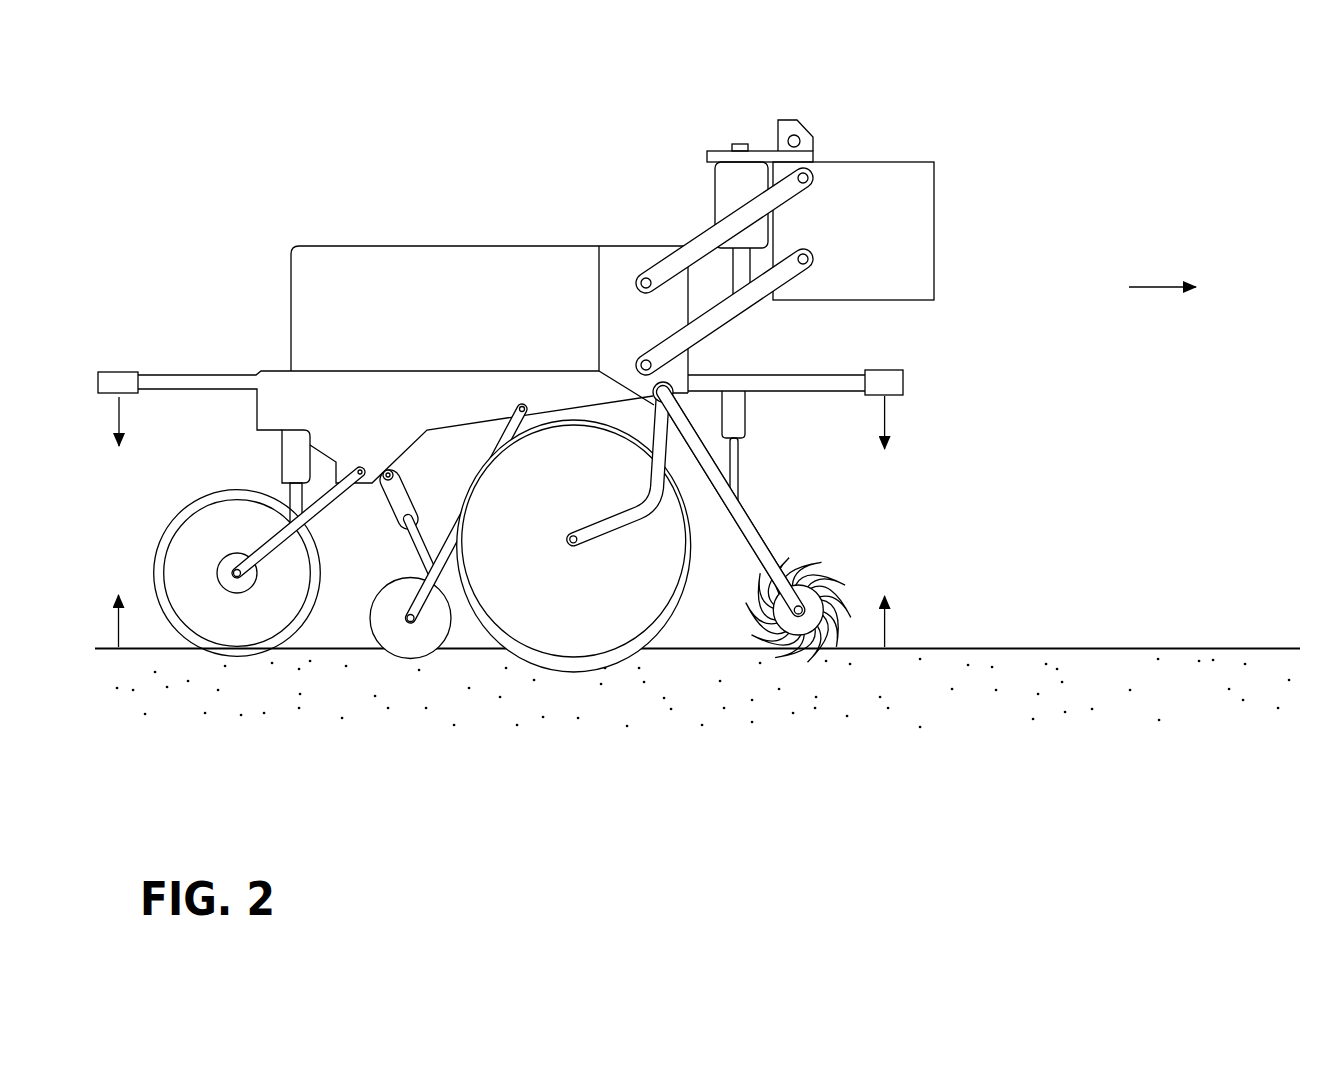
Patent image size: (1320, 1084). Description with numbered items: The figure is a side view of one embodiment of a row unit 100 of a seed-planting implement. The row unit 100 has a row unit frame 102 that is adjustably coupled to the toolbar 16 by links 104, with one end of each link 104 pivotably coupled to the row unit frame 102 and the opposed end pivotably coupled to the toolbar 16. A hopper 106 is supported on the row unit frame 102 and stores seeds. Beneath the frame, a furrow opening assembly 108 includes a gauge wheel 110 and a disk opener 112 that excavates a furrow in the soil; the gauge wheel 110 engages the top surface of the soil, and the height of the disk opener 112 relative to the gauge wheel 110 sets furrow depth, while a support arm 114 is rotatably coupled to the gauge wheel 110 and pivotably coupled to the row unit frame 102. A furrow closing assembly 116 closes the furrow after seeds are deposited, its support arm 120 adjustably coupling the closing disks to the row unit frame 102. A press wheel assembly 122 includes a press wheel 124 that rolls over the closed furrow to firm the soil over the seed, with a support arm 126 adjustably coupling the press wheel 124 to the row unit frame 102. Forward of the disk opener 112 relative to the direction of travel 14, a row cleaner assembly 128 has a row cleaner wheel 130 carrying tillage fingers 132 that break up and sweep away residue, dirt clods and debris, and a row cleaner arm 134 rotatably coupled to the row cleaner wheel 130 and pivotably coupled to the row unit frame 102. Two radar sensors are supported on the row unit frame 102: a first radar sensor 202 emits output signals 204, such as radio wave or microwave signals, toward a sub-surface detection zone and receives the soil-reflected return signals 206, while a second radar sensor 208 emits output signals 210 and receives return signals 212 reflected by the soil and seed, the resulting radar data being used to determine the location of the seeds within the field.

The row unit 100 is at (345, 139).
The direction of travel 14 is at (1158, 286).
The toolbar 16 is at (846, 300).
The row unit frame 102 is at (657, 257).
The links 104 is at (789, 245).
The hopper 106 is at (424, 247).
The furrow opening assembly 108 is at (409, 656).
The gauge wheel 110 is at (560, 637).
The disk opener 112 is at (525, 663).
The support arm 114 is at (611, 533).
The furrow closing assembly 116 is at (389, 657).
The support arm 120 is at (517, 427).
The press wheel assembly 122 is at (188, 474).
The press wheel 124 is at (243, 490).
The support arm 126 is at (323, 503).
The row cleaner assembly 128 is at (794, 586).
The row cleaner wheel 130 is at (797, 640).
The fingers 132 is at (760, 630).
The row cleaner arm 134 is at (760, 530).
The first radar sensor 202 is at (904, 374).
The output signals 204 is at (885, 418).
The return signals 206 is at (885, 605).
The second radar sensor 208 is at (122, 372).
The output signals 210 is at (118, 423).
The return signals 212 is at (118, 617).